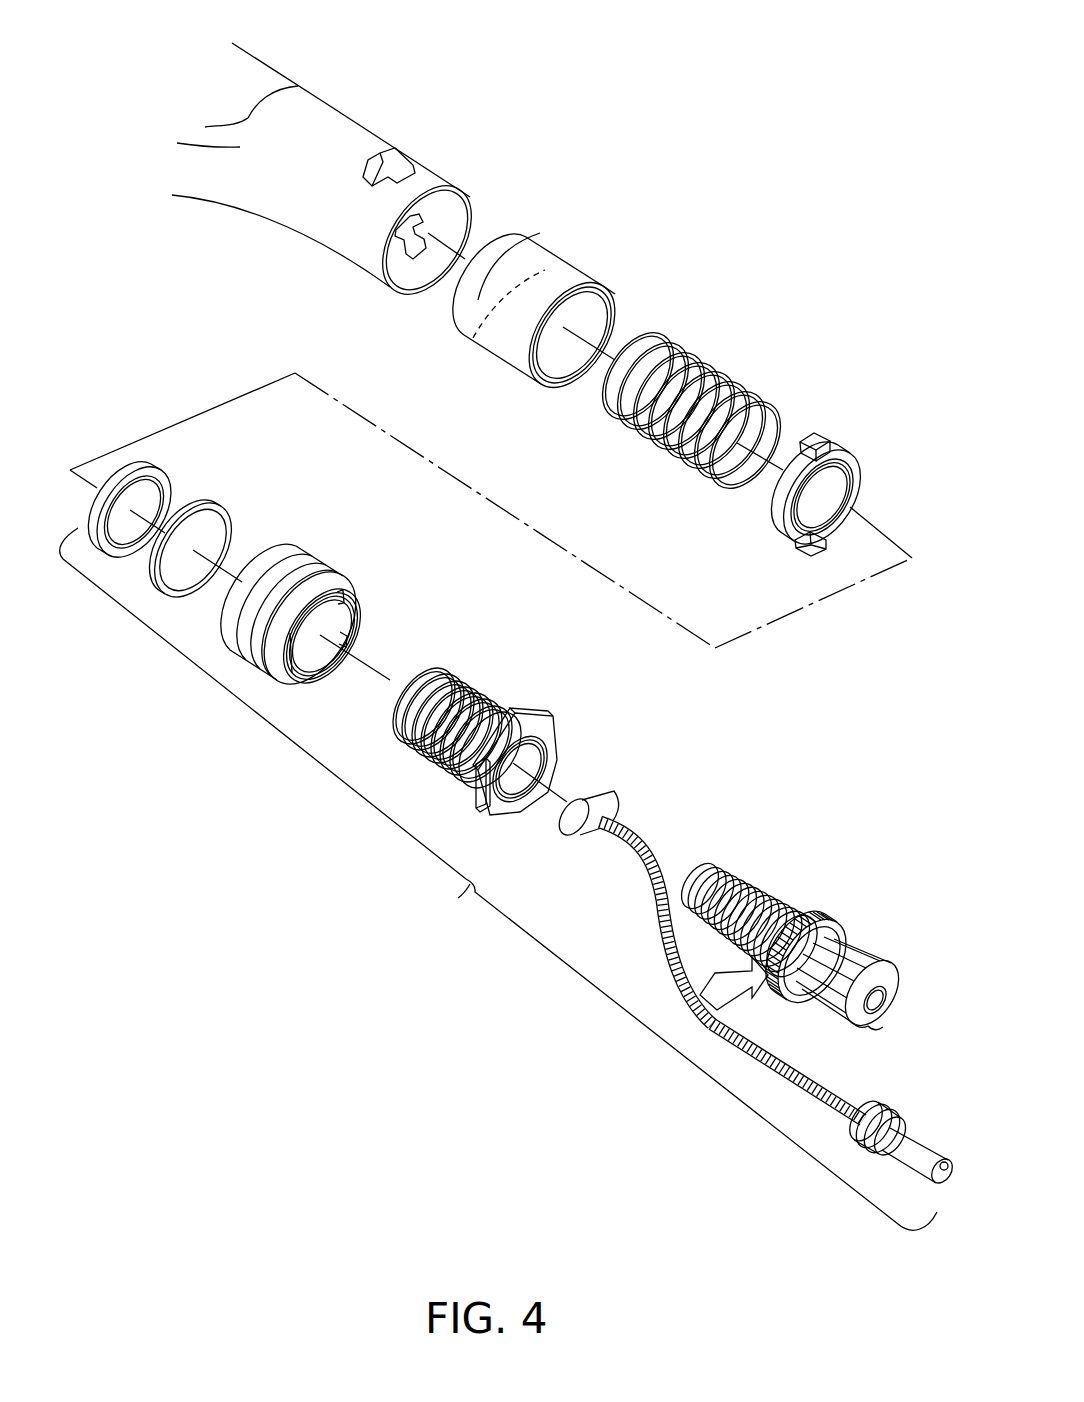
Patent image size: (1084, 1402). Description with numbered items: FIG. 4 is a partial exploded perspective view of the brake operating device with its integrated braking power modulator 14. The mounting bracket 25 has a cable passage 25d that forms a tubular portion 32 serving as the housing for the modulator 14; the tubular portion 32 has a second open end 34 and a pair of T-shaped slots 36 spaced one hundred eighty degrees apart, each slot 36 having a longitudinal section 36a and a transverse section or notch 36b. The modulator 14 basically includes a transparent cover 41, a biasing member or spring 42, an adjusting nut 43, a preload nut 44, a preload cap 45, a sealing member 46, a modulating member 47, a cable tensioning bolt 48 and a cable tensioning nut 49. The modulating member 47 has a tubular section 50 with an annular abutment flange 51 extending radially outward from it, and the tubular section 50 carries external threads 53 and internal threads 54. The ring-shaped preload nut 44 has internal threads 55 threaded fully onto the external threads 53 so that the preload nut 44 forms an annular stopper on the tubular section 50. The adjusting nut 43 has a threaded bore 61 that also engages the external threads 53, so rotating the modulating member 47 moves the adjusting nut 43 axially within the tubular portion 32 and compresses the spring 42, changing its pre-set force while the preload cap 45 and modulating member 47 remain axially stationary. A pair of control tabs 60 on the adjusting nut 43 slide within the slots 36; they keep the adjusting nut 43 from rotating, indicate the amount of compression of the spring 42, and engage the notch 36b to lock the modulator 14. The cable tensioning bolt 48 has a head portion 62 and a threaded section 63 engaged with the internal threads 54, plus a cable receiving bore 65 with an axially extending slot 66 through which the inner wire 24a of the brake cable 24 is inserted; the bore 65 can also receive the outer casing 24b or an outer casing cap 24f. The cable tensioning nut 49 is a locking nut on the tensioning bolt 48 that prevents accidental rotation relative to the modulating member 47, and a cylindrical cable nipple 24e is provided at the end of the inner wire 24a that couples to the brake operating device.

The braking power modulator 14 is at (717, 292).
The brake cable 24 is at (874, 1100).
The inner wire 24a is at (650, 953).
The outer casing 24b is at (932, 1147).
The cable nipple 24e is at (604, 794).
The outer casing cap 24f is at (866, 1147).
The mounting bracket 25 is at (251, 52).
The cable passage 25d is at (403, 270).
The tubular portion 32 is at (352, 110).
The second open end 34 is at (473, 213).
The T-shaped slots 36 is at (425, 208).
The longitudinal section 36a is at (394, 148).
The transverse section or notch 36b is at (362, 163).
The transparent cover 41 is at (570, 243).
The biasing member or spring 42 is at (735, 370).
The adjusting nut 43 is at (851, 443).
The preload nut 44 is at (167, 466).
The preload cap 45 is at (236, 511).
The sealing member 46 is at (340, 551).
The modulating member 47 is at (514, 710).
The cable tensioning bolt 48 is at (755, 876).
The cable tensioning nut 49 is at (833, 912).
The tubular section 50 is at (420, 678).
The annular abutment flange 51 is at (552, 720).
The external threads 53 is at (421, 752).
The internal threads 54 is at (515, 800).
The internal threads 55 is at (163, 496).
The control tabs 60 is at (816, 428).
The threaded bore 61 is at (857, 497).
The head portion 62 is at (867, 953).
The threaded section 63 is at (778, 891).
The cable receiving bore 65 is at (881, 1000).
The axially extending slot 66 is at (831, 1000).